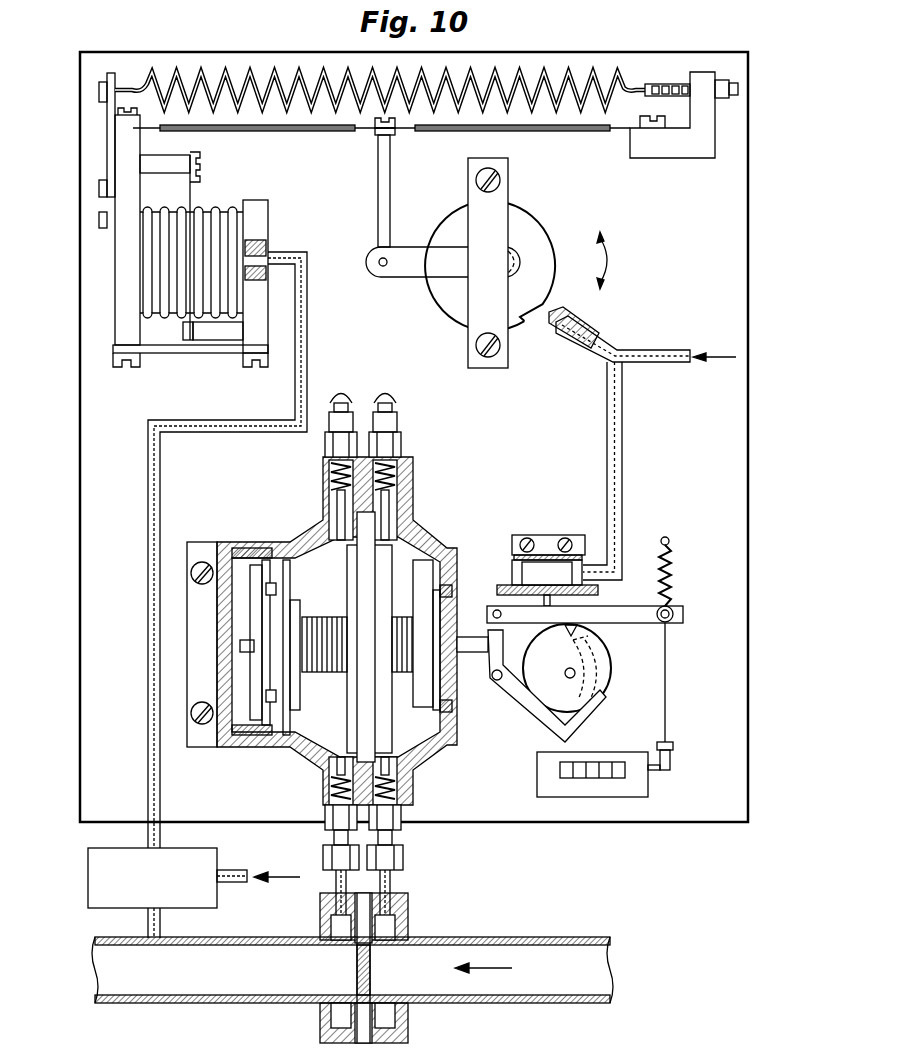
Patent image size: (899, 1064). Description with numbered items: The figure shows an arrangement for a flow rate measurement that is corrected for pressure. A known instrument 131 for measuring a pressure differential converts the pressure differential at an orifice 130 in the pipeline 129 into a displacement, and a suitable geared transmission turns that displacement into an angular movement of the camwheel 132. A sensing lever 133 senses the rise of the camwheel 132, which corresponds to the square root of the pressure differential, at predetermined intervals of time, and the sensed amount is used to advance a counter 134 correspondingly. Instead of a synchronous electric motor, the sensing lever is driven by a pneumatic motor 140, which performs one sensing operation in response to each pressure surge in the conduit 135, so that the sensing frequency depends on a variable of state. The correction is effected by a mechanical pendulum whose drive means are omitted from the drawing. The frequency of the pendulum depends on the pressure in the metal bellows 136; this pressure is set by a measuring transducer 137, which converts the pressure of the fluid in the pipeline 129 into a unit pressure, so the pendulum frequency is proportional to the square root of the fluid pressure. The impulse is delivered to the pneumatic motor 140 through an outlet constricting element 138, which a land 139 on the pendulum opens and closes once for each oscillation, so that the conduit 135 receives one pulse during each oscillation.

The pipeline 129 is at (588, 937).
The orifice 130 is at (370, 938).
The instrument for measuring a pressure differential 131 is at (385, 700).
The camwheel 132 is at (603, 670).
The sensing lever 133 is at (683, 623).
The counter 134 is at (593, 778).
The conduit 135 is at (625, 468).
The metal bellows 136 is at (228, 210).
The measuring transducer 137 is at (103, 876).
The outlet constricting element 138 is at (586, 327).
The land 139 is at (541, 311).
The pneumatic motor 140 is at (513, 563).